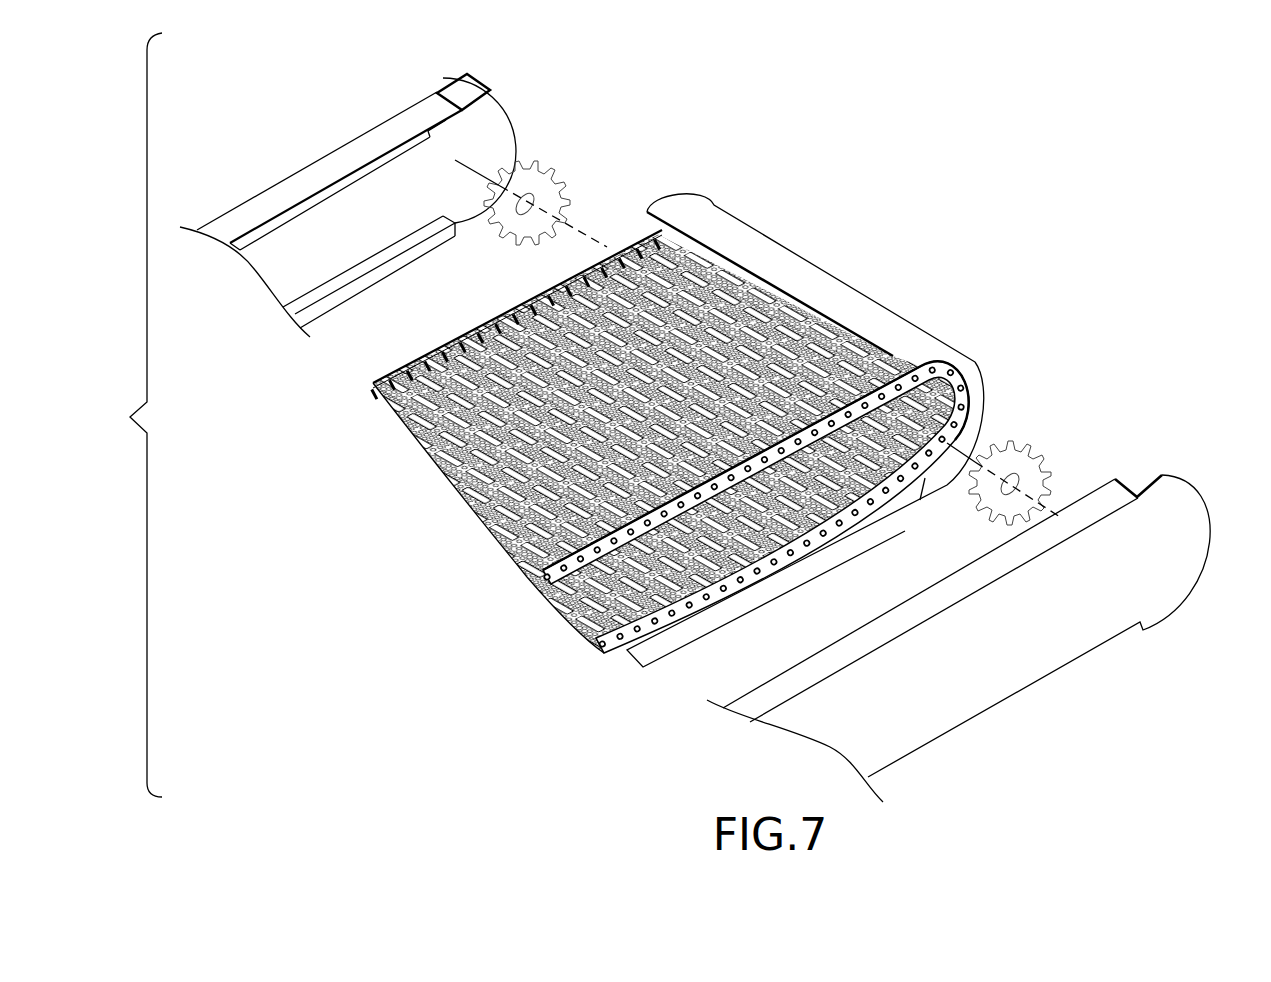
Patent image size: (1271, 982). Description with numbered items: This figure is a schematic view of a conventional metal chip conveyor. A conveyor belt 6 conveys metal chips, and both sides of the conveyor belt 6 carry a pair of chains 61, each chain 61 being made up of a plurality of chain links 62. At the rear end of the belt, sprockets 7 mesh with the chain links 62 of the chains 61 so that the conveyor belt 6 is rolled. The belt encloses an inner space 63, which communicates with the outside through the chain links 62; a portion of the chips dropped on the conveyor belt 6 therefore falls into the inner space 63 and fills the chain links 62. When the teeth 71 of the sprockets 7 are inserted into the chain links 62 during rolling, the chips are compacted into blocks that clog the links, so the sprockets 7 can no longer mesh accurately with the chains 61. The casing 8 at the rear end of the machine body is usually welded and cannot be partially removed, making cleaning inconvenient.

The conveyor belt 6 is at (705, 422).
The chain 61 is at (627, 247).
The chain link 62 is at (900, 362).
The inner space 63 is at (592, 604).
The sprocket 7 is at (780, 305).
The teeth 71 is at (557, 168).
The casing 8 is at (284, 240).